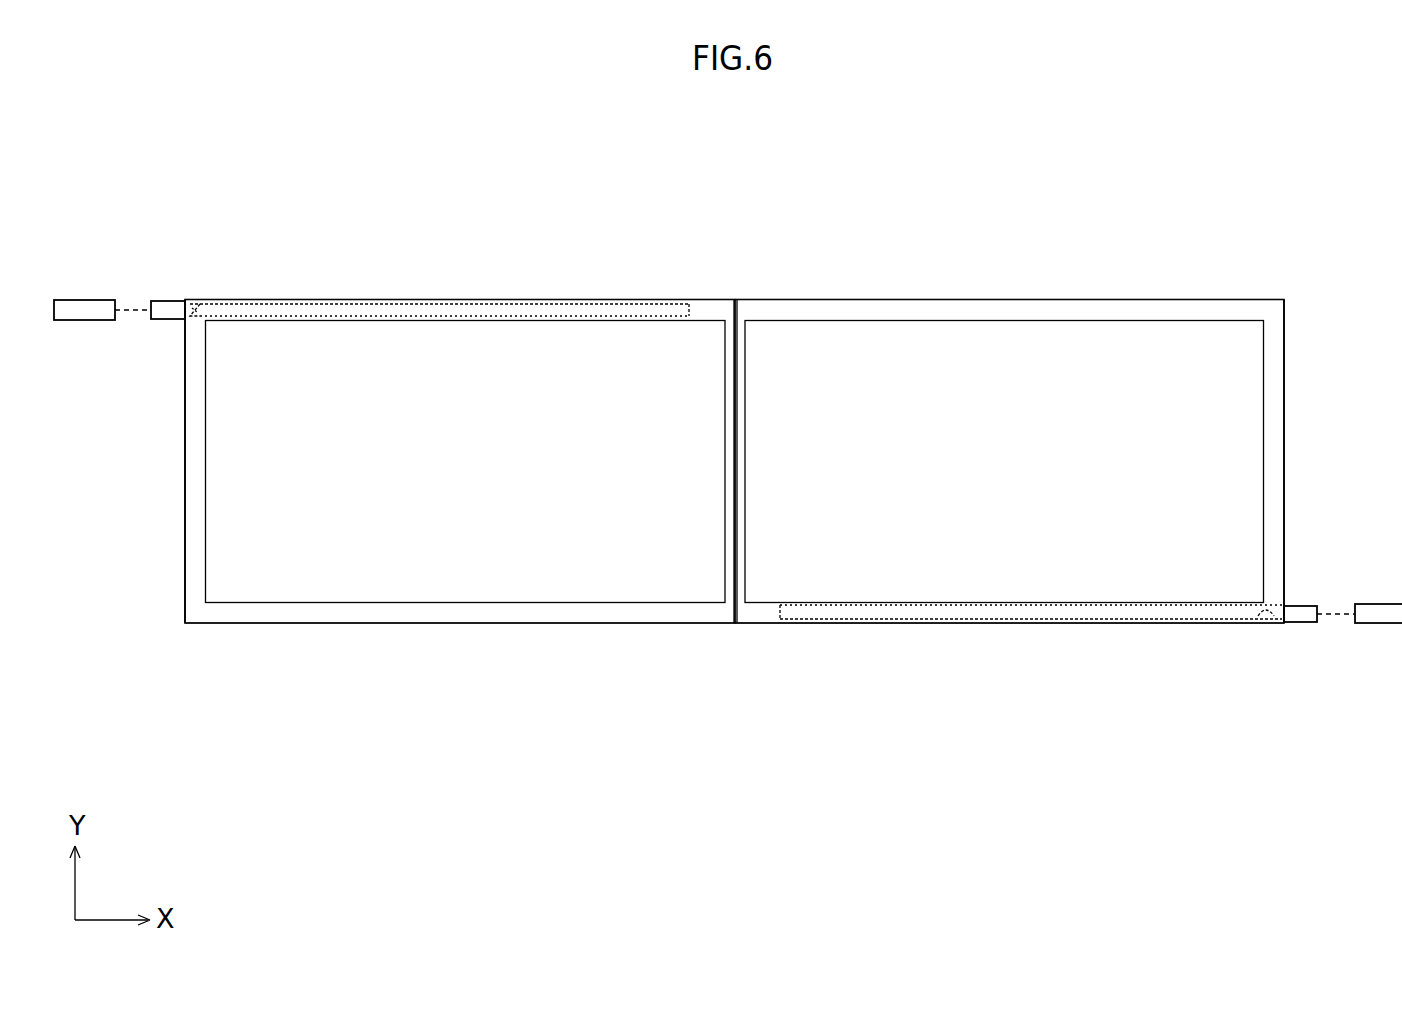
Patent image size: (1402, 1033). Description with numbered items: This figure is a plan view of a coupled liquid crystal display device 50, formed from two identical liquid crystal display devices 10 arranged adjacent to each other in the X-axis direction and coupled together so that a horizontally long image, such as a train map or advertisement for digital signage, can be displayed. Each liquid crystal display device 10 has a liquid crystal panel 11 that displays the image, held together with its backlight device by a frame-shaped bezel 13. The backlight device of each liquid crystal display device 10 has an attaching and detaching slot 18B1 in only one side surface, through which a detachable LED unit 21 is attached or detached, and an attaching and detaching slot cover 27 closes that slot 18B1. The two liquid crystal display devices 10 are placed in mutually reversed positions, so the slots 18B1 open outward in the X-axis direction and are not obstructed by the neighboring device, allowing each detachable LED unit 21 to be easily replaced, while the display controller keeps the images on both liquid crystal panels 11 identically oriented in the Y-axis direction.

The liquid crystal display device 10 is at (967, 299).
The liquid crystal panel 11 is at (1127, 343).
The bezel 13 is at (1052, 310).
The attaching and detaching slot 18B1 is at (208, 297).
The detachable LED unit 21 is at (173, 301).
The attaching and detaching slot cover 27 is at (80, 300).
The coupled liquid crystal display device 50 is at (712, 672).